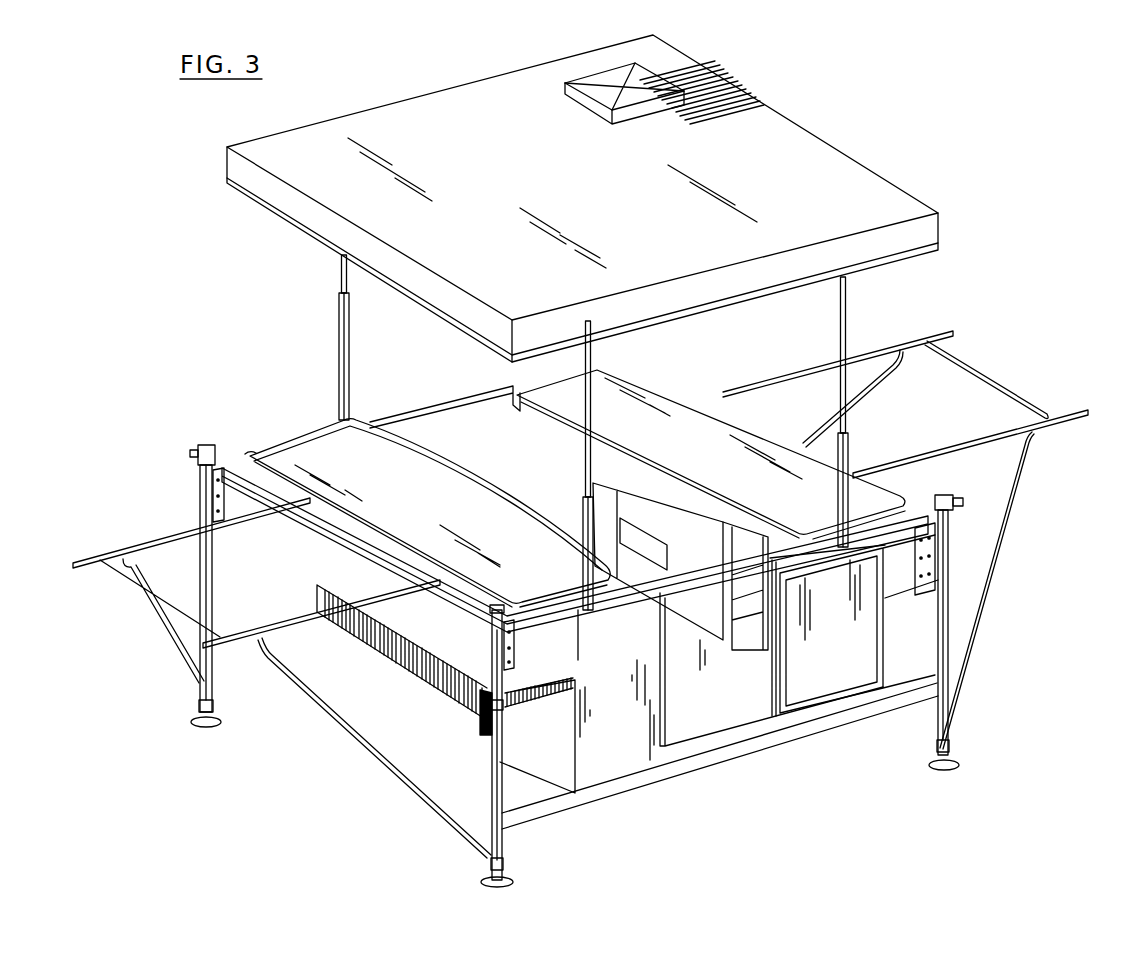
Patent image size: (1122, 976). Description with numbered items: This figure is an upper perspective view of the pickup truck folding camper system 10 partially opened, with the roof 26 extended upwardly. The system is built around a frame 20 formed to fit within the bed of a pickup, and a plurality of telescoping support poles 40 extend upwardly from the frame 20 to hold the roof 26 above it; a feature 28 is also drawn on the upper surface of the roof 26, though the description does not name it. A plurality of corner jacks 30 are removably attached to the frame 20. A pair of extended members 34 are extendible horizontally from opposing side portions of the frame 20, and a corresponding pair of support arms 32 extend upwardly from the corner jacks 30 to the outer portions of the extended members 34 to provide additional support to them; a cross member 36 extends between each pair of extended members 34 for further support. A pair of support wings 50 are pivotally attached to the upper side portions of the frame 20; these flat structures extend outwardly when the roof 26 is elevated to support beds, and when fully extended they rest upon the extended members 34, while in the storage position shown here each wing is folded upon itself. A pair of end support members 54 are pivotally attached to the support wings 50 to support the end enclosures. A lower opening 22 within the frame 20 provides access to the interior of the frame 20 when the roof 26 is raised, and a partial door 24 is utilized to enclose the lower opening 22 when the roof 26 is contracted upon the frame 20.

The pickup truck folding camper system 10 is at (130, 97).
The frame 20 is at (612, 765).
The lower opening 22 is at (683, 745).
The partial door 24 is at (820, 700).
The roof 26 is at (878, 196).
The skylight vent 28 is at (562, 80).
The corner jacks 30 is at (203, 507).
The support arms 32 is at (893, 372).
The extended members 34 is at (947, 332).
The cross member 36 is at (980, 371).
The telescoping support poles 40 is at (338, 383).
The support wings 50 is at (372, 435).
The end support members 54 is at (295, 430).